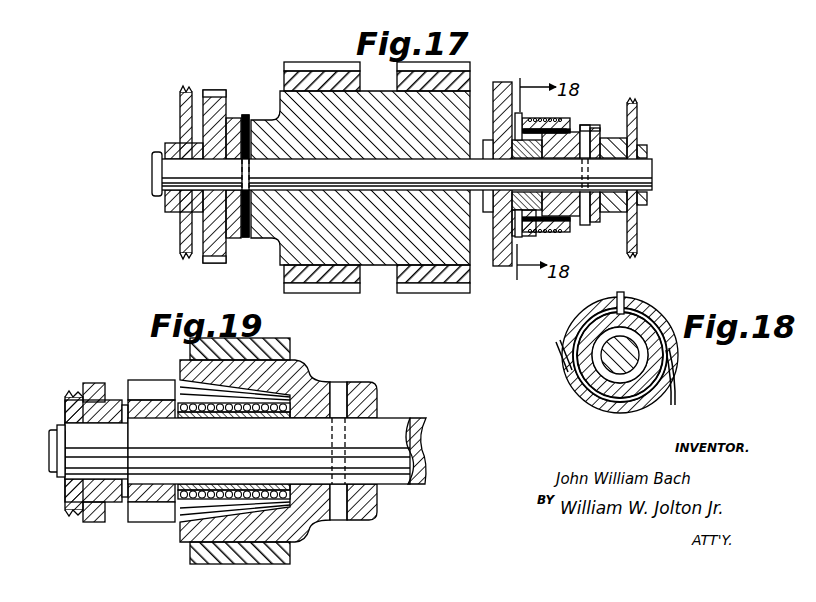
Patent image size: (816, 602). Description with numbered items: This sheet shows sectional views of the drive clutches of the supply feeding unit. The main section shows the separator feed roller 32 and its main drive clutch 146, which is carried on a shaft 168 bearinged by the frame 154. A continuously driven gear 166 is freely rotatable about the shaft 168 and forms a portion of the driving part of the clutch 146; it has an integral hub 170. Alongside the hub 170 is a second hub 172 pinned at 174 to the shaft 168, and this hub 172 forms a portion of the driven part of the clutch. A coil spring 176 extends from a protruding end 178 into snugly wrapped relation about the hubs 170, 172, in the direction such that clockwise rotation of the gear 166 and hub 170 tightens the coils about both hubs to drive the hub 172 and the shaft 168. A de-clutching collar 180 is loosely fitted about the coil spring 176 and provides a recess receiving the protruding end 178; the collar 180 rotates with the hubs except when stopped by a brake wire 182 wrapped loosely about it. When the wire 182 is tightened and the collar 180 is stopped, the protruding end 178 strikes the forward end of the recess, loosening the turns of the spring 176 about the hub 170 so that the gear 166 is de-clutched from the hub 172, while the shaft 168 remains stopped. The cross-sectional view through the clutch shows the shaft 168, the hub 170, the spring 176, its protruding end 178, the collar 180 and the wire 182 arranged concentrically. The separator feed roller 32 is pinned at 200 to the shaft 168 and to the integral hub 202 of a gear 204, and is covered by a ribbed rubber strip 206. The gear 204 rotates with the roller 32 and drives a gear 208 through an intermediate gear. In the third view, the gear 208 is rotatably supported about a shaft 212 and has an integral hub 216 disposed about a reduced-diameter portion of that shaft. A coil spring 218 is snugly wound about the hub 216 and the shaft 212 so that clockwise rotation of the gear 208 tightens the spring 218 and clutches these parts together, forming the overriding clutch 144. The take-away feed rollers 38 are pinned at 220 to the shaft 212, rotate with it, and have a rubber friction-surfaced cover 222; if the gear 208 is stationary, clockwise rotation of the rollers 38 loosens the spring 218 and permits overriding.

In FIG. 17, the separator feed roller 32 is at (462, 107).
In FIG. 19, the take-away feed rollers 38 is at (296, 380).
In FIG. 19, the overriding clutch 144 is at (146, 359).
In FIG. 17, the main drive clutch 146 is at (592, 101).
In FIG. 17, the frame 154 is at (180, 107).
In FIG. 19, the frame 154 is at (95, 387).
In FIG. 17, the gear 166 is at (507, 83).
In FIG. 17, the shaft 168 is at (645, 172).
In FIG. 18, the shaft 168 is at (615, 372).
In FIG. 17, the hub 170 is at (519, 236).
In FIG. 18, the hub 170 is at (563, 333).
In FIG. 17, the second hub 172 is at (580, 228).
In FIG. 17, the pin 174 is at (585, 126).
In FIG. 17, the coil spring 176 is at (558, 235).
In FIG. 18, the coil spring 176 is at (665, 355).
In FIG. 17, the protruding end 178 is at (519, 118).
In FIG. 18, the protruding end 178 is at (624, 294).
In FIG. 17, the de-clutching collar 180 is at (560, 113).
In FIG. 18, the de-clutching collar 180 is at (566, 372).
In FIG. 17, the wire 182 is at (557, 117).
In FIG. 18, the wire 182 is at (683, 383).
In FIG. 17, the pin 200 is at (248, 117).
In FIG. 17, the integral hub 202 is at (236, 118).
In FIG. 17, the gear 204 is at (205, 108).
In FIG. 17, the rubber strip 206 is at (298, 73).
In FIG. 19, the gear 208 is at (137, 383).
In FIG. 19, the shaft 212 is at (49, 428).
In FIG. 19, the integral hub 216 is at (207, 419).
In FIG. 19, the coil spring 218 is at (188, 498).
In FIG. 19, the pin 220 is at (342, 388).
In FIG. 19, the rubber friction-surfaced cover 222 is at (283, 343).